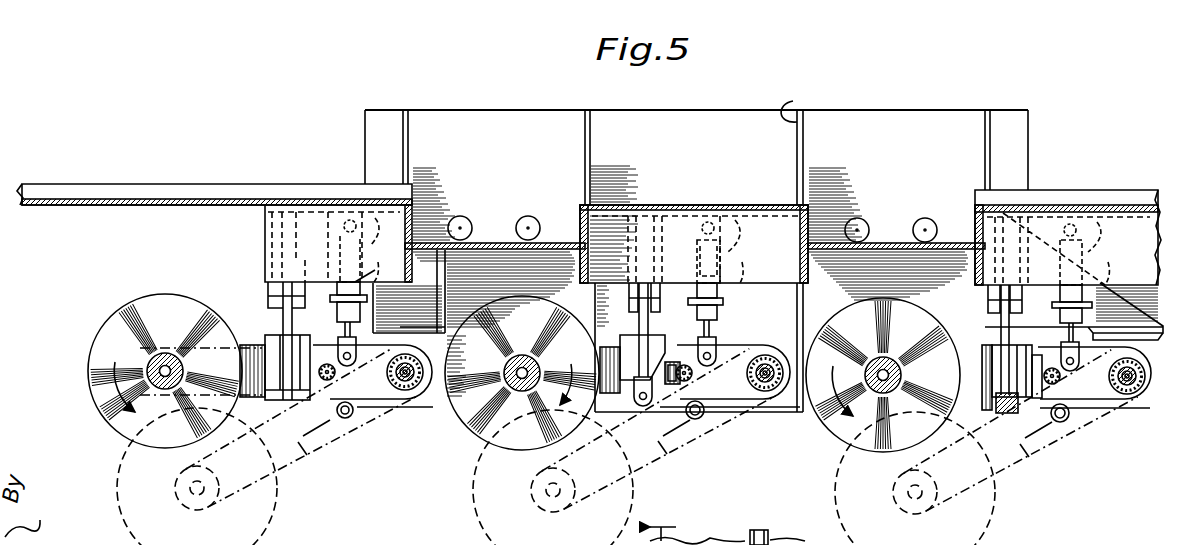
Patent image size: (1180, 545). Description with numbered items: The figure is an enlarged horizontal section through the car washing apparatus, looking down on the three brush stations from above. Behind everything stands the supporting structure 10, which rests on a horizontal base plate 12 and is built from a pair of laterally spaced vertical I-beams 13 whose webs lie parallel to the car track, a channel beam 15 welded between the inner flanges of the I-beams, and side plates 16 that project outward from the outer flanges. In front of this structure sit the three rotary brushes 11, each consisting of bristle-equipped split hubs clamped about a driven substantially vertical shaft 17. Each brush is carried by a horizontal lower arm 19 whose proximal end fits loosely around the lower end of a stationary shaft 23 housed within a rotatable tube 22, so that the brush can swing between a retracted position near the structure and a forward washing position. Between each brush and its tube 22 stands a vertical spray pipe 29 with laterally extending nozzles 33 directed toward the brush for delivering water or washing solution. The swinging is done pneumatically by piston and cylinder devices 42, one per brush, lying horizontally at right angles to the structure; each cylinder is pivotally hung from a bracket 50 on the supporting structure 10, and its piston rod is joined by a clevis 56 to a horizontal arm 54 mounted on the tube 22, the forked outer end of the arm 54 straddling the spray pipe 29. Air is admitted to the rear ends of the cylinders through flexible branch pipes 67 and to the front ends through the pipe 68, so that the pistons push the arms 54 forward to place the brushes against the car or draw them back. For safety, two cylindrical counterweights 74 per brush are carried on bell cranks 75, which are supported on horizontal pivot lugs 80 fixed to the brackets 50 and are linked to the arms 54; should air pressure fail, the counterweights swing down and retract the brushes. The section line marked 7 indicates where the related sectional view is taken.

The section line indicator 7 is at (663, 523).
The supporting structure 10 is at (812, 131).
The rotary brushes 11 is at (192, 306).
The base plate 12 is at (883, 117).
The I-beams 13 is at (483, 243).
The channel beam 15 is at (718, 206).
The side plates 16 is at (181, 205).
The shafts 17 is at (168, 356).
The lower arms 19 is at (250, 348).
The tubes 22 is at (405, 380).
The shafts 23 is at (410, 380).
The spray pipes 29 is at (337, 384).
The nozzles 33 is at (1064, 368).
The piston and cylinder devices 42 is at (350, 268).
The brackets 50 is at (694, 261).
The arms 54 is at (310, 452).
The clevices 56 is at (344, 345).
The flexible branch pipes 67 is at (1100, 228).
The pipe 68 is at (1110, 273).
The counterweights 74 is at (646, 346).
The bell cranks 75 is at (639, 328).
The pivot lugs 80 is at (629, 301).